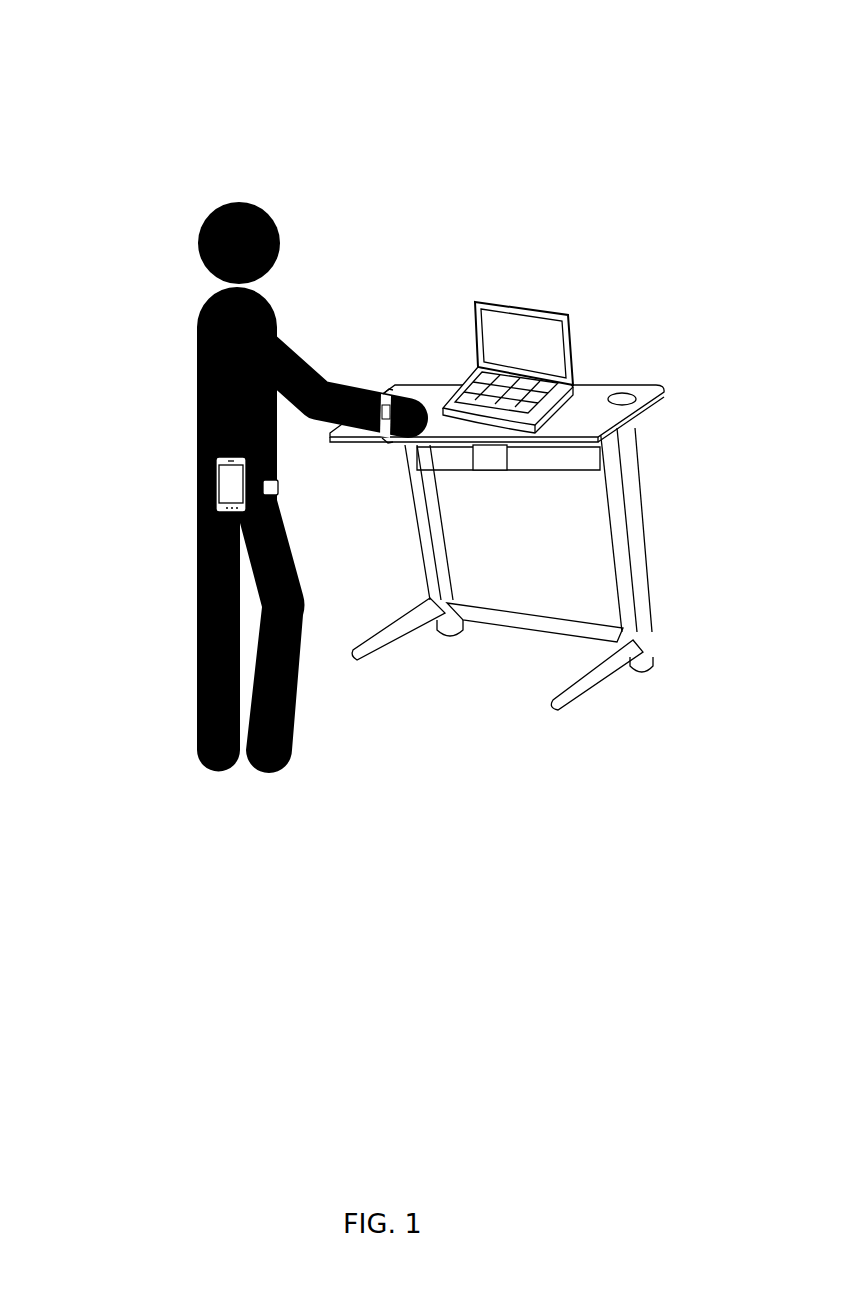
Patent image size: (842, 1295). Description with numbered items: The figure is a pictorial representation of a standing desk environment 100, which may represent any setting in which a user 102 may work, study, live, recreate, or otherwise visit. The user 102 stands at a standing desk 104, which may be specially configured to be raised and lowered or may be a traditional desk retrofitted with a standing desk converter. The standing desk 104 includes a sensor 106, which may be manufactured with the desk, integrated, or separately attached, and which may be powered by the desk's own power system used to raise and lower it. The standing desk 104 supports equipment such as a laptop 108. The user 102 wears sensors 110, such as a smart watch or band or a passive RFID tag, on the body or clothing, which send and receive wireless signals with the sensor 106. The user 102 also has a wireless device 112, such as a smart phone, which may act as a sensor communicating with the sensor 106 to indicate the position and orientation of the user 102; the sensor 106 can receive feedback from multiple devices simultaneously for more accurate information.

The standing desk environment 100 is at (453, 36).
The user 102 is at (190, 331).
The standing desk 104 is at (640, 417).
The sensor 106 is at (493, 460).
The laptop 108 is at (549, 313).
The sensors 110 is at (388, 405).
The wireless device 112 is at (232, 487).